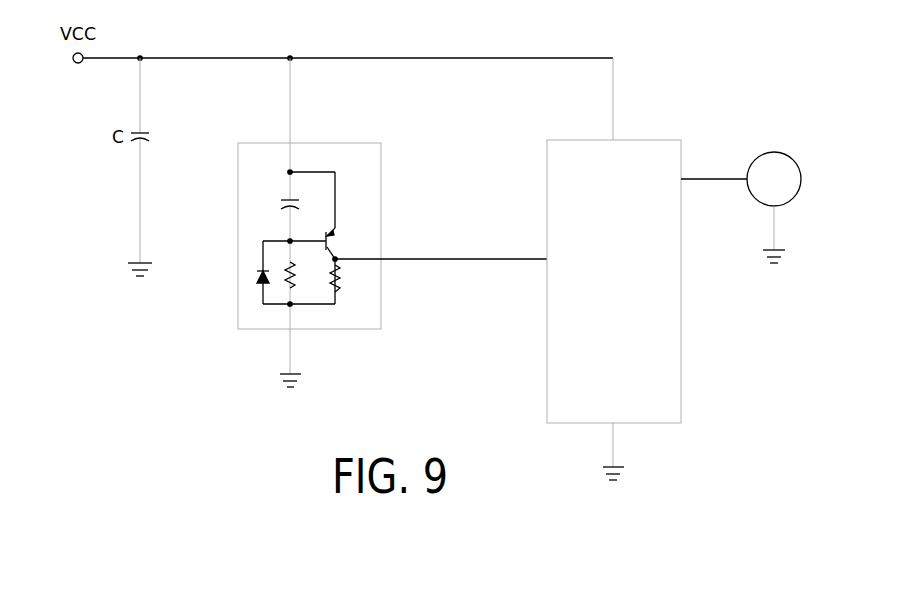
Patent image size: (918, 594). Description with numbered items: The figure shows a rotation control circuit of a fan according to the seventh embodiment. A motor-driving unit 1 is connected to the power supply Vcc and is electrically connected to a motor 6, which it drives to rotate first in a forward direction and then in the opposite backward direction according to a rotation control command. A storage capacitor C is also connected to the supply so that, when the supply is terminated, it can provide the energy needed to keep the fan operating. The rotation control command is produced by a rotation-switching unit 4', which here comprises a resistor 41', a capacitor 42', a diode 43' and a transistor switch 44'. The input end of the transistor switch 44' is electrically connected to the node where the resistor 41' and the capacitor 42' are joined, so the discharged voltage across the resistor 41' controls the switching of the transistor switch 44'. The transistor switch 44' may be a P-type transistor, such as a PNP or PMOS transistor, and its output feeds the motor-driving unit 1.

The motor-driving unit 1 is at (641, 421).
The motor 6 is at (755, 163).
The rotation-switching unit 4' is at (313, 267).
The resistor 41' is at (258, 326).
The capacitor 42' is at (268, 147).
The diode 43' is at (223, 281).
The transistor switch 44' is at (381, 252).